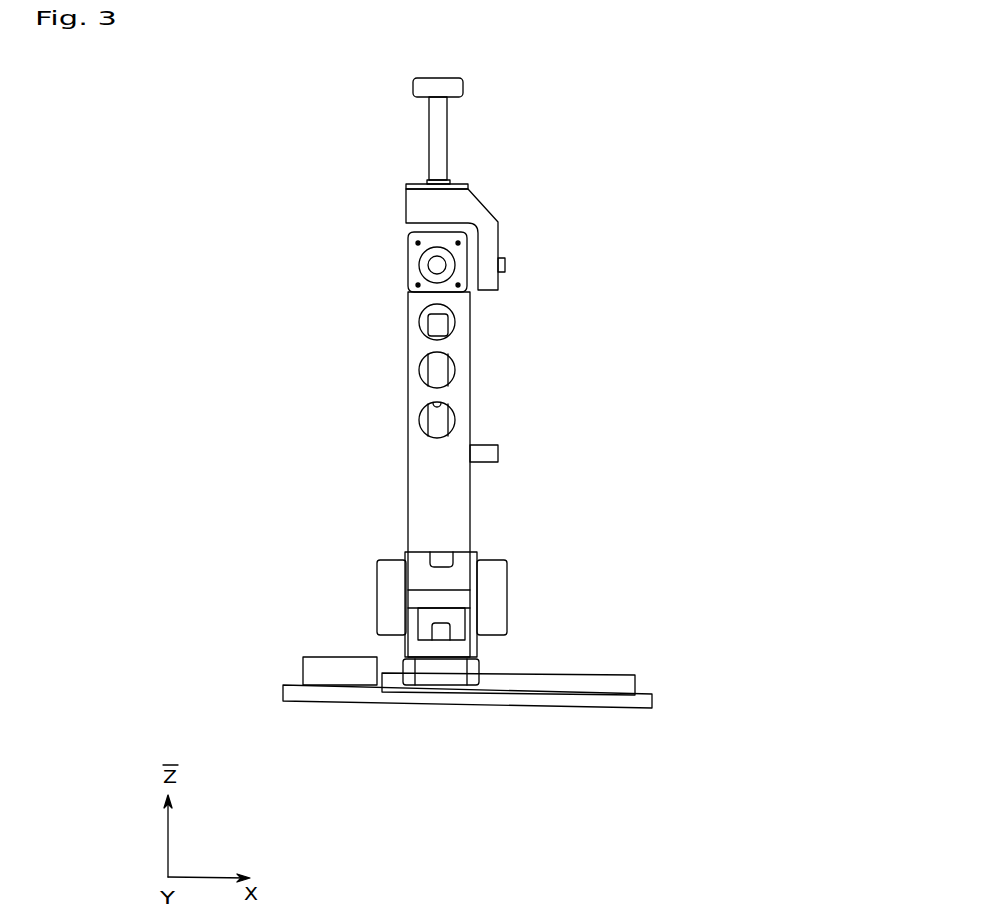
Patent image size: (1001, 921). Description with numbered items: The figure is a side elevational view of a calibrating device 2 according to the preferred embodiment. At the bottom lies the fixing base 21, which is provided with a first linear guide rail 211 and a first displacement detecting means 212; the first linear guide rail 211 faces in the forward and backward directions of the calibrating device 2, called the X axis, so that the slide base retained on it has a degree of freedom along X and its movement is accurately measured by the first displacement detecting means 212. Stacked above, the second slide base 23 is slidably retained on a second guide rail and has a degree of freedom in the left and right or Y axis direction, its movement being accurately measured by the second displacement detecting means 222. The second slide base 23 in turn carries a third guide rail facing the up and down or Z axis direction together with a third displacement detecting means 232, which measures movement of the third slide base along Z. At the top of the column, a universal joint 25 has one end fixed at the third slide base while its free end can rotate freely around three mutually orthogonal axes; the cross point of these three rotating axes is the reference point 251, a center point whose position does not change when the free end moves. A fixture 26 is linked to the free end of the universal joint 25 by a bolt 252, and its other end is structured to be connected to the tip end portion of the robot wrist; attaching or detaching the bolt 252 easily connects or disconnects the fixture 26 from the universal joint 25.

The calibrating device 2 is at (84, 121).
The fixture 26 is at (460, 212).
The bolt 252 is at (505, 265).
The universal joint 25 is at (457, 270).
The reference point 251 is at (437, 265).
The second slide base 23 is at (450, 493).
The third displacement detecting means 232 is at (390, 572).
The second displacement detecting means 222 is at (493, 575).
The first displacement detecting means 212 is at (360, 668).
The first linear guide rail 211 is at (515, 680).
The fixing base 21 is at (343, 695).